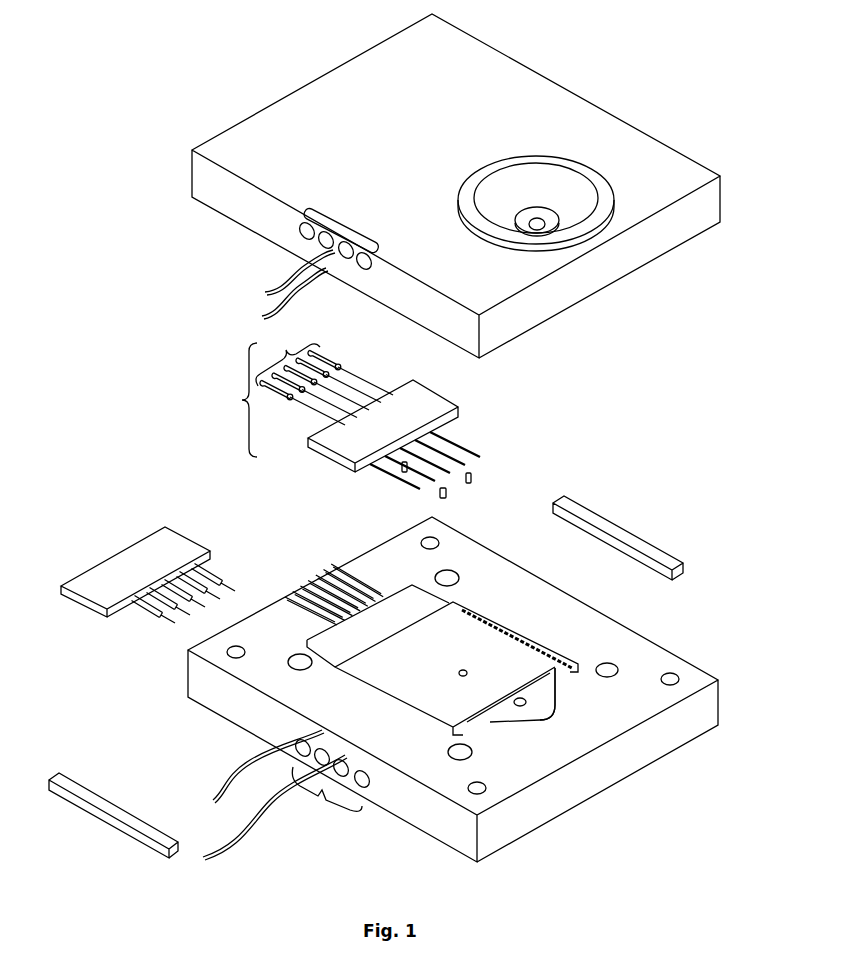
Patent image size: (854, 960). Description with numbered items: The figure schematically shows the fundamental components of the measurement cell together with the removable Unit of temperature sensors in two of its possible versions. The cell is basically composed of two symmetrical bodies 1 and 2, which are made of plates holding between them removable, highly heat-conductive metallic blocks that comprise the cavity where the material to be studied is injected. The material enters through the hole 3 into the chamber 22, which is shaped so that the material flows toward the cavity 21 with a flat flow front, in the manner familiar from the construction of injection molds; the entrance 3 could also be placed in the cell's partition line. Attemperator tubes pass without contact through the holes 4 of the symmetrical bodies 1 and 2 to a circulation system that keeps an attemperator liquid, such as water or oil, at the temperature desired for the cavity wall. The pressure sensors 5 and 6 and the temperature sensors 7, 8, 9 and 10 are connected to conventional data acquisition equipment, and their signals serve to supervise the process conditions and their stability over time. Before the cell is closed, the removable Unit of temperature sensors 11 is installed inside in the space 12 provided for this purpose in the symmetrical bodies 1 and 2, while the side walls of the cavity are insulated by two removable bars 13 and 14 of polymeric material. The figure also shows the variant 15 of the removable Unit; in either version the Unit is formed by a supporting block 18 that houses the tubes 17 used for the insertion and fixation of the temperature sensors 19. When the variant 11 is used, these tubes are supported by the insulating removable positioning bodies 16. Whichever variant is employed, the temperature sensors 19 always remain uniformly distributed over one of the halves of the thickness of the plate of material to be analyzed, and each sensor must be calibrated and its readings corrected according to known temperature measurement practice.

The symmetrical body 1 is at (553, 106).
The symmetrical body 2 is at (676, 738).
The hole 3 is at (550, 214).
The holes 4 is at (348, 213).
The pressure sensor 5 is at (470, 672).
The pressure sensor 6 is at (530, 700).
The temperature sensor 7 is at (222, 770).
The temperature sensor 8 is at (222, 840).
The temperature sensor 9 is at (262, 308).
The temperature sensor 10 is at (272, 278).
The removable Unit of temperature sensors 11 is at (344, 402).
The space 12 is at (400, 600).
The removable bar 13 is at (640, 535).
The removable bar 14 is at (118, 800).
The variant of the removable Unit of temperature sensors 15 is at (152, 553).
The insulating removable positioning bodies 16 is at (455, 496).
The tubes 17 is at (465, 432).
The supporting block 18 is at (450, 393).
The temperature sensors 19 is at (280, 342).
The cavity 21 is at (505, 637).
The chamber 22 is at (507, 710).